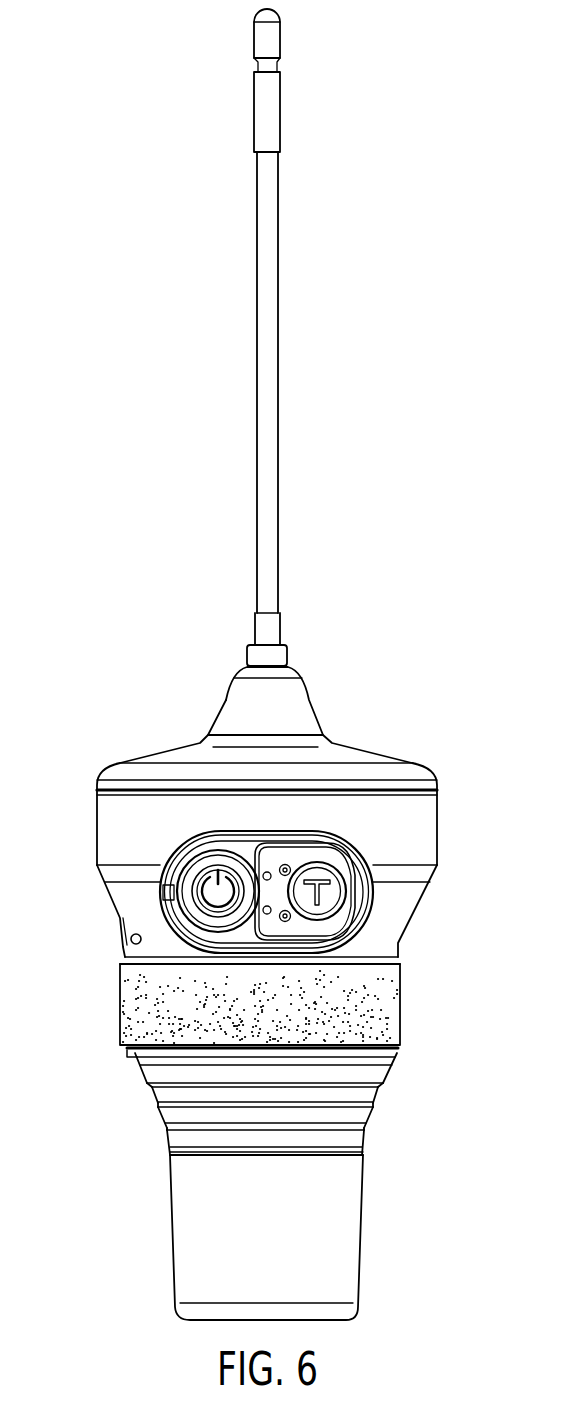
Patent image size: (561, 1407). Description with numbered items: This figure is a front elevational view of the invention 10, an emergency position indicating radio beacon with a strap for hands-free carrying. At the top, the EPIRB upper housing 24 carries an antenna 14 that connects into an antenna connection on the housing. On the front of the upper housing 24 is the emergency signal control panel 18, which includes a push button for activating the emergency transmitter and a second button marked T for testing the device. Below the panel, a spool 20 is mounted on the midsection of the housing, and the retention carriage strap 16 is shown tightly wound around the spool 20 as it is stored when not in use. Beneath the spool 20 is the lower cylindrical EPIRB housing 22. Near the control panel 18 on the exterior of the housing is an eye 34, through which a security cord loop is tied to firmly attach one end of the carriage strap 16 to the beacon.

The invention 10 is at (383, 604).
The antenna 14 is at (279, 554).
The retention carriage strap 16 is at (400, 1000).
The emergency signal activating switch panel 18 is at (370, 853).
The spool 20 is at (398, 962).
The lower cylindrical EPIRB housing 22 is at (362, 1222).
The EPIRB upper housing 24 is at (370, 750).
The eye 34 is at (128, 942).